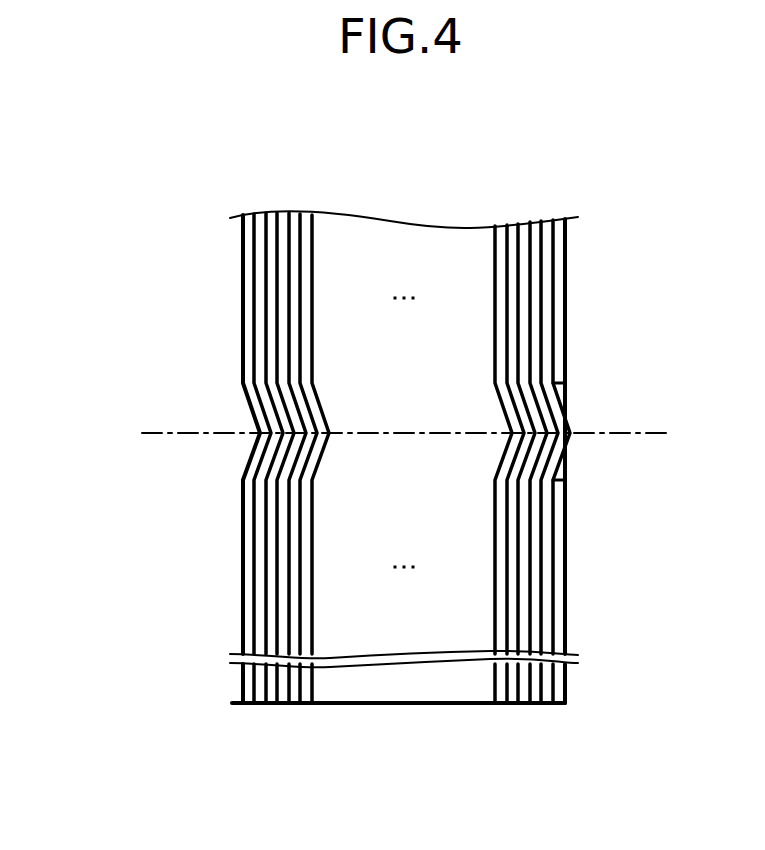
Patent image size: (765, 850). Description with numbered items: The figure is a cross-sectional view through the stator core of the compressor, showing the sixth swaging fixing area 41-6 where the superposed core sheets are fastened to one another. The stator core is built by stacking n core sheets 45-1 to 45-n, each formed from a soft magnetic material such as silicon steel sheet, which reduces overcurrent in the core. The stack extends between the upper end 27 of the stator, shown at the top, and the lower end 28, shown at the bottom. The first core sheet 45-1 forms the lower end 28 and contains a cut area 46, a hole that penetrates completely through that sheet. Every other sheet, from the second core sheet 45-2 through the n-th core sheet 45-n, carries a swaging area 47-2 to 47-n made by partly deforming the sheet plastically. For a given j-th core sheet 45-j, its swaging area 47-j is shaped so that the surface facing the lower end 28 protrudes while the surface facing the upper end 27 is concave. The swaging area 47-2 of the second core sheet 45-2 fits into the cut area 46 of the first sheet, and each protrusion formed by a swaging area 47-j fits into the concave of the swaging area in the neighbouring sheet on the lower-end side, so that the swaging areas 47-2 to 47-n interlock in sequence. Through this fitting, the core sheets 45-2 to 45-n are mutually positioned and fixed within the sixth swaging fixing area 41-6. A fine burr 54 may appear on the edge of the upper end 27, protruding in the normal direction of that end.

The sixth swaging fixing area 41-6 is at (375, 456).
The upper end 27 is at (243, 599).
The lower end 28 is at (566, 598).
The burr 54 is at (243, 700).
The cut area 46 is at (566, 392).
The core sheet 45-1 is at (558, 227).
The core sheet 45-2 is at (547, 705).
The core sheet 45-j is at (500, 705).
The core sheet 45-n is at (243, 202).
The swaging area 47-2 is at (566, 421).
The swaging area 47-j is at (509, 469).
The swaging area 47-n is at (238, 409).